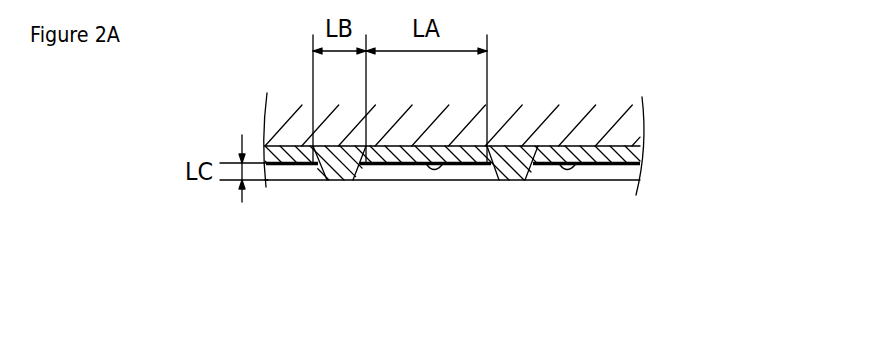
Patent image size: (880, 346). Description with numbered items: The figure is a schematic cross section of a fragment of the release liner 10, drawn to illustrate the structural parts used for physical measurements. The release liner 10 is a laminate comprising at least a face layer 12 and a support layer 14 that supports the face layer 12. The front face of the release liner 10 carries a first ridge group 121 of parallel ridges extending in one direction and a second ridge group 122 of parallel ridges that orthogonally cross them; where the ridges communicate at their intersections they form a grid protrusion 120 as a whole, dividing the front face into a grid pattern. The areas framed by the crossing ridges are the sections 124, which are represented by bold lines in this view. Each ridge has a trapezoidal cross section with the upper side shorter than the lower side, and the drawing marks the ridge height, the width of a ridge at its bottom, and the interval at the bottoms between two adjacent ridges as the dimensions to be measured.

The release liner 10 is at (683, 65).
The face layer 12 is at (643, 155).
The support layer 14 is at (635, 125).
The grid protrusion 120 is at (452, 237).
The first ridge group 121 is at (335, 182).
The second ridge group 122 is at (405, 182).
The sections 124 is at (440, 163).